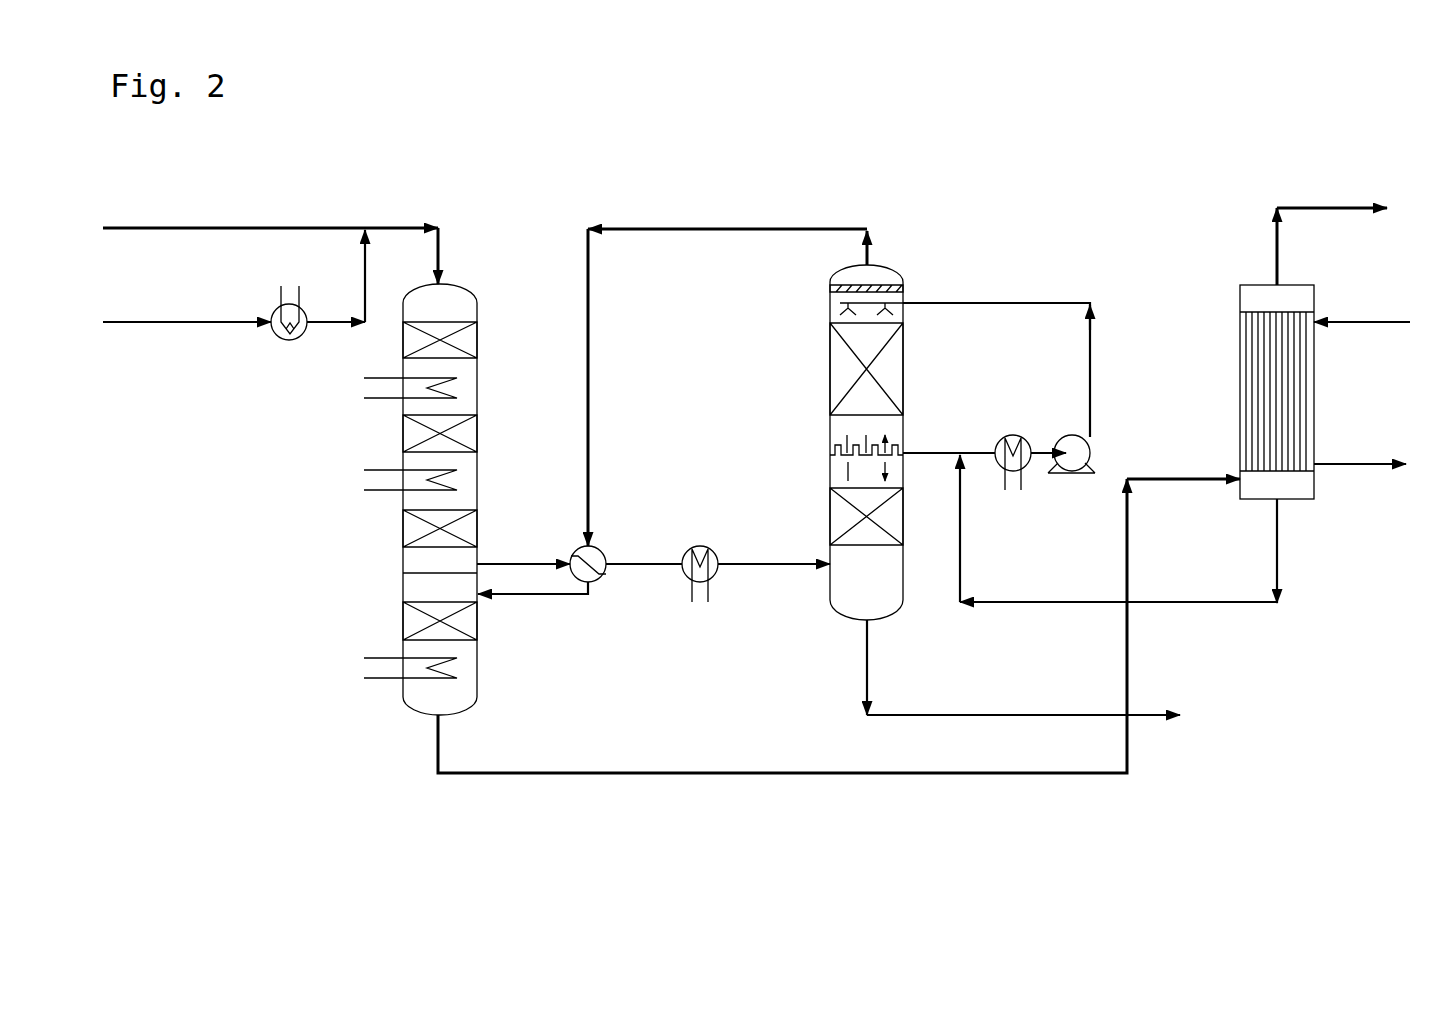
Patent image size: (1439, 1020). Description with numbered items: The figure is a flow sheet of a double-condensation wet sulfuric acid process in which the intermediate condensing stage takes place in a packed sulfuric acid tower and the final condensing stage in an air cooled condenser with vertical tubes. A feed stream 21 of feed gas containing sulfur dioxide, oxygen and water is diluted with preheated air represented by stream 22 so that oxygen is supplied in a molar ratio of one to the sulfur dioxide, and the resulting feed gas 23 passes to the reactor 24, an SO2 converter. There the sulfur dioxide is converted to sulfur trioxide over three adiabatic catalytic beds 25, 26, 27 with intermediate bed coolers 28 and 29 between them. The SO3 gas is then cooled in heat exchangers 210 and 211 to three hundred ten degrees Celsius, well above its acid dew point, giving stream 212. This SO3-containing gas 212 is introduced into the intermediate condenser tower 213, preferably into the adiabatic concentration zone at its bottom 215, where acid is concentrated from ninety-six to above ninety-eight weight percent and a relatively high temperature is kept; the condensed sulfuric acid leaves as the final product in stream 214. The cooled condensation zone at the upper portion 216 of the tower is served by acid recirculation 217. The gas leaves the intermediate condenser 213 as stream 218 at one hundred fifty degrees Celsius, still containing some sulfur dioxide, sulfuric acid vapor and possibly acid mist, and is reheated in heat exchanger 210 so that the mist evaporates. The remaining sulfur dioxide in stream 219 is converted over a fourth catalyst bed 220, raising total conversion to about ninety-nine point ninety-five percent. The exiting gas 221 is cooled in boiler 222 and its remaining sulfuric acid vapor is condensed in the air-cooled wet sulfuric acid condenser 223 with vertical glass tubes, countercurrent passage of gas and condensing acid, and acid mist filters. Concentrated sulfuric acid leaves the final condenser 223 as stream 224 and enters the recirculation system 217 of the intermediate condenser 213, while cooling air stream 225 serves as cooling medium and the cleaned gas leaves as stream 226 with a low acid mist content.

The feed stream 21 is at (270, 212).
The preheated air stream 22 is at (234, 292).
The resulting feed gas 23 is at (420, 256).
The reactor 24 is at (478, 292).
The adiabatic catalytic bed 25 is at (470, 340).
The adiabatic catalytic bed 26 is at (470, 434).
The adiabatic catalytic bed 27 is at (408, 527).
The intermediate bed cooler 28 is at (372, 383).
The intermediate bed cooler 29 is at (372, 478).
The heat exchanger 210 is at (606, 580).
The heat exchanger 211 is at (718, 583).
The SO3-containing gas stream 212 is at (774, 582).
The intermediate condenser tower 213 is at (903, 279).
The final product stream 214 is at (1023, 667).
The concentration zone 215 is at (895, 600).
The condensation zone 216 is at (828, 313).
The acid recirculation 217 is at (999, 396).
The gas stream leaving intermediate condenser 218 is at (727, 371).
The reheated gas stream 219 is at (533, 606).
The fourth catalyst bed 220 is at (413, 622).
The exiting gas stream 221 is at (839, 626).
The boiler 222 is at (372, 665).
The air-cooled wet sulfuric acid condenser 223 is at (1242, 276).
The concentrated sulfuric acid stream 224 is at (1118, 529).
The cooling air stream 225 is at (1376, 415).
The gas stream from final condenser 226 is at (1339, 229).